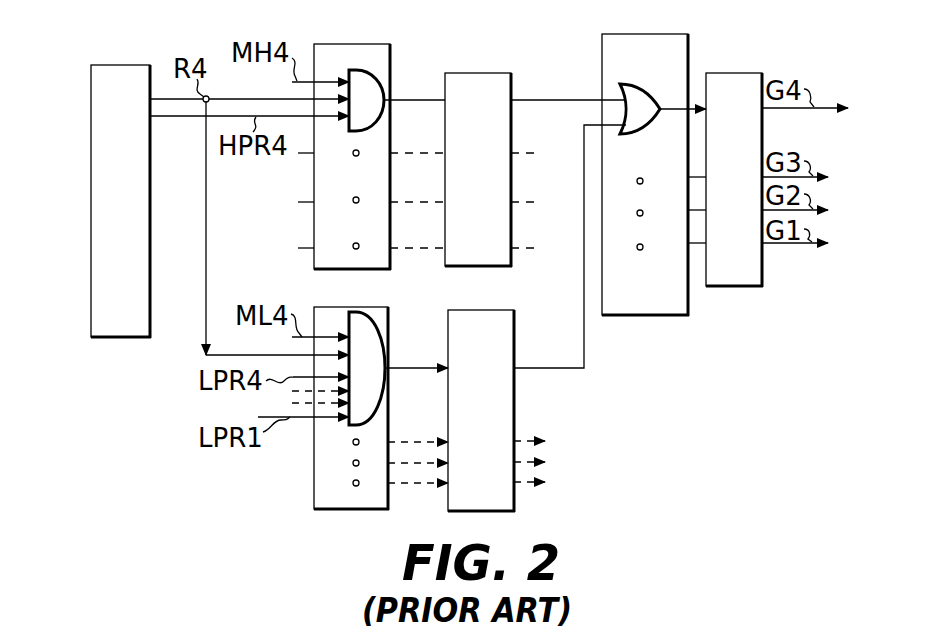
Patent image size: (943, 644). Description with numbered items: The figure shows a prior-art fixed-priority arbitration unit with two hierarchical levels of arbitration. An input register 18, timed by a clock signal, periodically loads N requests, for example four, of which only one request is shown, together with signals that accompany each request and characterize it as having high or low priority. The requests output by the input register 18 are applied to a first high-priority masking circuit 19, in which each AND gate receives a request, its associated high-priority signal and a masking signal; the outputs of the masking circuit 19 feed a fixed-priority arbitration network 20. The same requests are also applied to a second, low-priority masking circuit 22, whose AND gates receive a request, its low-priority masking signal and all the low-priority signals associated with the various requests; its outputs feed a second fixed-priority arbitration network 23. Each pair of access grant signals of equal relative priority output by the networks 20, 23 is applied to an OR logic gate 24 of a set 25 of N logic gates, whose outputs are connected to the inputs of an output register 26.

The input register 18 is at (118, 338).
The first high-priority masking circuit 19 is at (390, 52).
The fixed-priority arbitration network 20 is at (511, 73).
The second low-priority masking circuit 22 is at (314, 471).
The fixed-priority arbitration network 23 is at (514, 396).
The OR logic gate 24 is at (652, 124).
The set of N logic gates 25 is at (688, 38).
The output register 26 is at (752, 287).